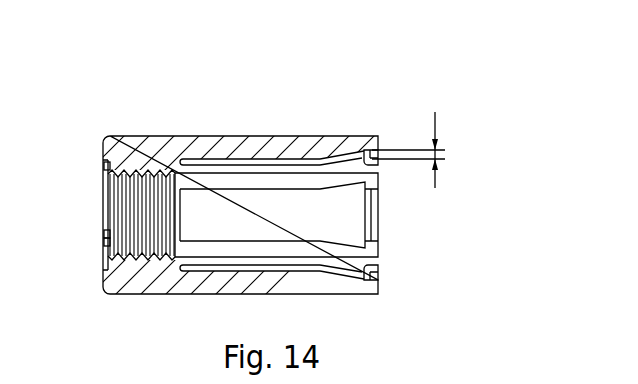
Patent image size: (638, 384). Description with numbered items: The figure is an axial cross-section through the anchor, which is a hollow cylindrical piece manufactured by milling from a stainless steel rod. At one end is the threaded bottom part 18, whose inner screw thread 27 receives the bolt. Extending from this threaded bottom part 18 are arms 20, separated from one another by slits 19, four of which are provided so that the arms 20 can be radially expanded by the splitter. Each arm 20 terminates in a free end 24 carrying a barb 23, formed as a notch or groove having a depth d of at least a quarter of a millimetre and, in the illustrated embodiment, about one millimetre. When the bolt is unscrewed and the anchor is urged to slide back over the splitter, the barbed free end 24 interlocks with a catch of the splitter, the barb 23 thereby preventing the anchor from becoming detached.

The threaded bottom part 18 is at (133, 153).
The slit 19 is at (262, 170).
The arm 20 is at (317, 152).
The barb 23 is at (378, 294).
The free end 24 is at (372, 138).
The inner screw thread 27 is at (135, 207).